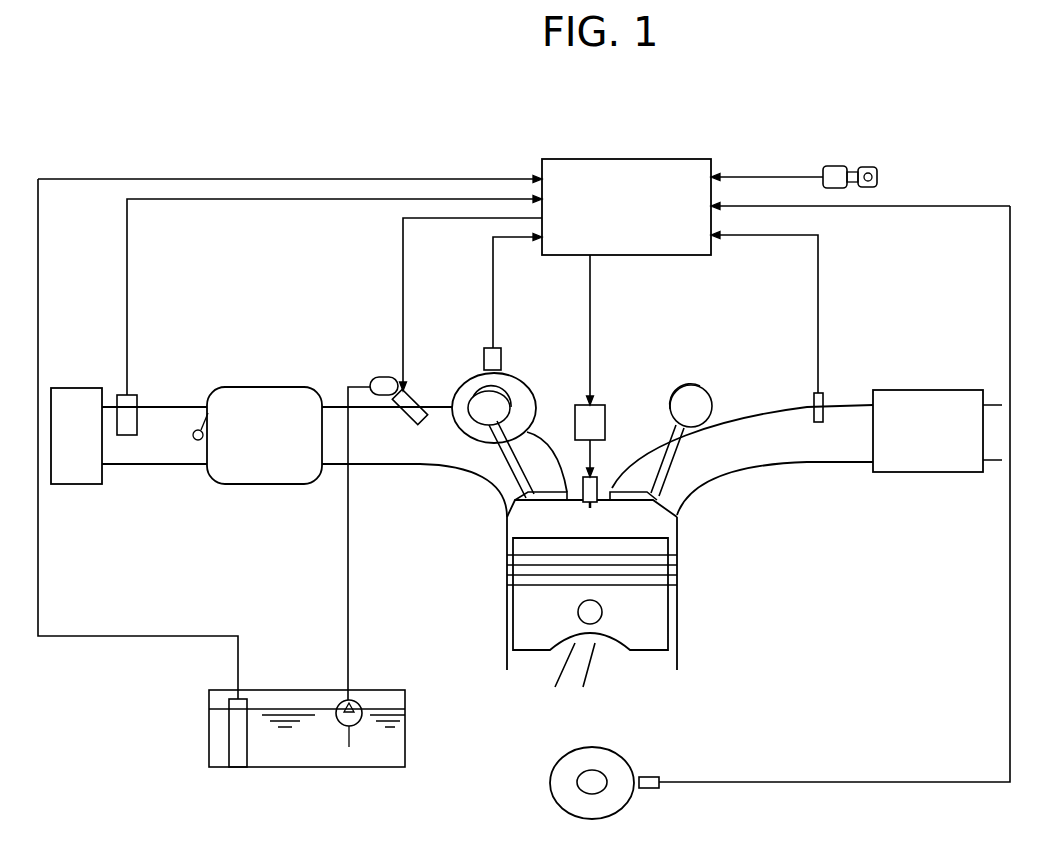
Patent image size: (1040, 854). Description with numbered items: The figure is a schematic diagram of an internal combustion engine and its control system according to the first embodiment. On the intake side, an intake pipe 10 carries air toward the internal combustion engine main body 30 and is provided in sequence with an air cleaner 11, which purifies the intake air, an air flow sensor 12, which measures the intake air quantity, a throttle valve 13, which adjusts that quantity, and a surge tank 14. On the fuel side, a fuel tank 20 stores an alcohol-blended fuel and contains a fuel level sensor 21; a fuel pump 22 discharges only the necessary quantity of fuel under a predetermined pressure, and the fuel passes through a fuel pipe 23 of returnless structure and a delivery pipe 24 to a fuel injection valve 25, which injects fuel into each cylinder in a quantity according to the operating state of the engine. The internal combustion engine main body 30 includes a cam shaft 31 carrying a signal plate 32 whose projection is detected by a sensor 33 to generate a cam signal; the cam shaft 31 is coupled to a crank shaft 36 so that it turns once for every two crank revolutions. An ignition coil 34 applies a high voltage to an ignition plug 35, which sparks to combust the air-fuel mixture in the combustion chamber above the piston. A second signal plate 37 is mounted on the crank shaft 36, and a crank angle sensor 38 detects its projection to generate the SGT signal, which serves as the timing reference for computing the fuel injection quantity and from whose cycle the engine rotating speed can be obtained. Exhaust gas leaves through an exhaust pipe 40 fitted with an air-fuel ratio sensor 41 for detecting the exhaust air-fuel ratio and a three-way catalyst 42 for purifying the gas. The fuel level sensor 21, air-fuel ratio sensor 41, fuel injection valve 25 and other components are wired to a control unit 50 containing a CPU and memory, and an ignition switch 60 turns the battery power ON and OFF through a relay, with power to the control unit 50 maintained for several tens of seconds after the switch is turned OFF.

The intake pipe 10 is at (127, 464).
The air cleaner 11 is at (76, 388).
The air flow sensor 12 is at (133, 393).
The throttle valve 13 is at (194, 440).
The surge tank 14 is at (267, 484).
The fuel tank 20 is at (303, 767).
The fuel level sensor 21 is at (229, 740).
The fuel pump 22 is at (362, 732).
The fuel pipe 23 is at (347, 601).
The delivery pipe 24 is at (372, 380).
The fuel injection valve 25 is at (420, 395).
The internal combustion engine main body 30 is at (677, 607).
The cam shaft 31 is at (510, 398).
The signal plate 32 is at (500, 377).
The sensor 33 is at (485, 350).
The ignition coil 34 is at (605, 405).
The ignition plug 35 is at (597, 480).
The crank shaft 36 is at (577, 778).
The signal plate 37 is at (618, 747).
The crank angle sensor 38 is at (655, 772).
The exhaust pipe 40 is at (813, 463).
The air-fuel ratio sensor 41 is at (823, 393).
The three-way catalyst 42 is at (937, 472).
The control unit 50 is at (680, 158).
The ignition switch 60 is at (836, 165).